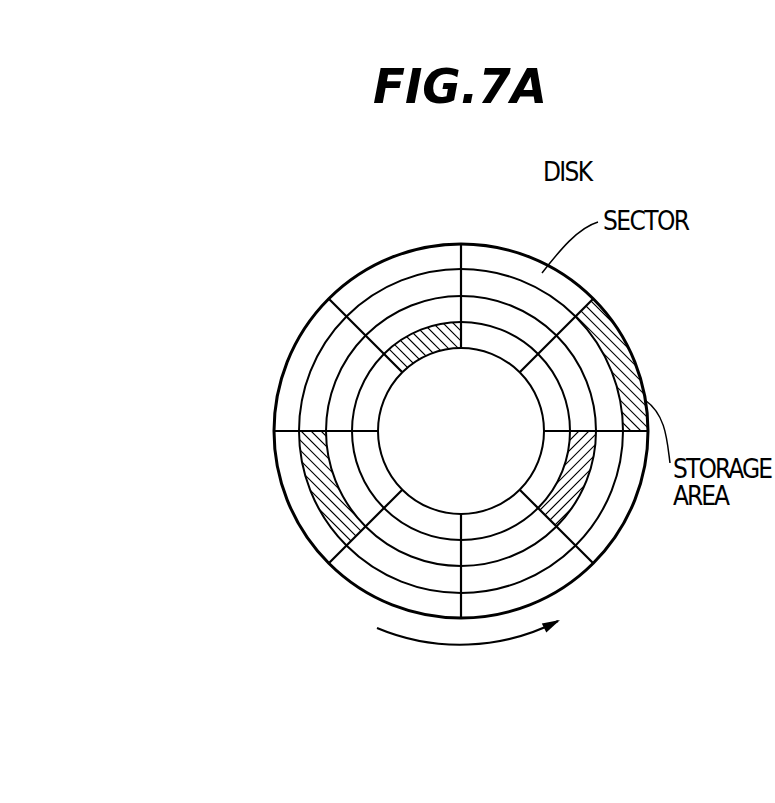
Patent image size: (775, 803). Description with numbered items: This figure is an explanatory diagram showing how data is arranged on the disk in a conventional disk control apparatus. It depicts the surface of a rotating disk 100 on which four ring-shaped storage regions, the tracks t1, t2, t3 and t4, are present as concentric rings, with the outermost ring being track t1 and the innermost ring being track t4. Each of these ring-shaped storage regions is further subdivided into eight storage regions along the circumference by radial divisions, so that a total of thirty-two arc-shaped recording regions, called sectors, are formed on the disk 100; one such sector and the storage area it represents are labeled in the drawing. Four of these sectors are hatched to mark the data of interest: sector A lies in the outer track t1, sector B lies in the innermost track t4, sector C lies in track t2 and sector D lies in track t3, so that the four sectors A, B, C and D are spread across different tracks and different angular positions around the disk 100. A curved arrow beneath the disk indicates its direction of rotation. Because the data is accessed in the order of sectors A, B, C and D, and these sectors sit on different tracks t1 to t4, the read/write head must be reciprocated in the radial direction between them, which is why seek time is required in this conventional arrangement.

The rotating disk 100 is at (477, 357).
The track t1 is at (400, 602).
The track t2 is at (405, 565).
The track t3 is at (410, 538).
The track t4 is at (410, 508).
The sector A is at (598, 312).
The sector B is at (423, 346).
The sector C is at (332, 517).
The sector D is at (577, 477).